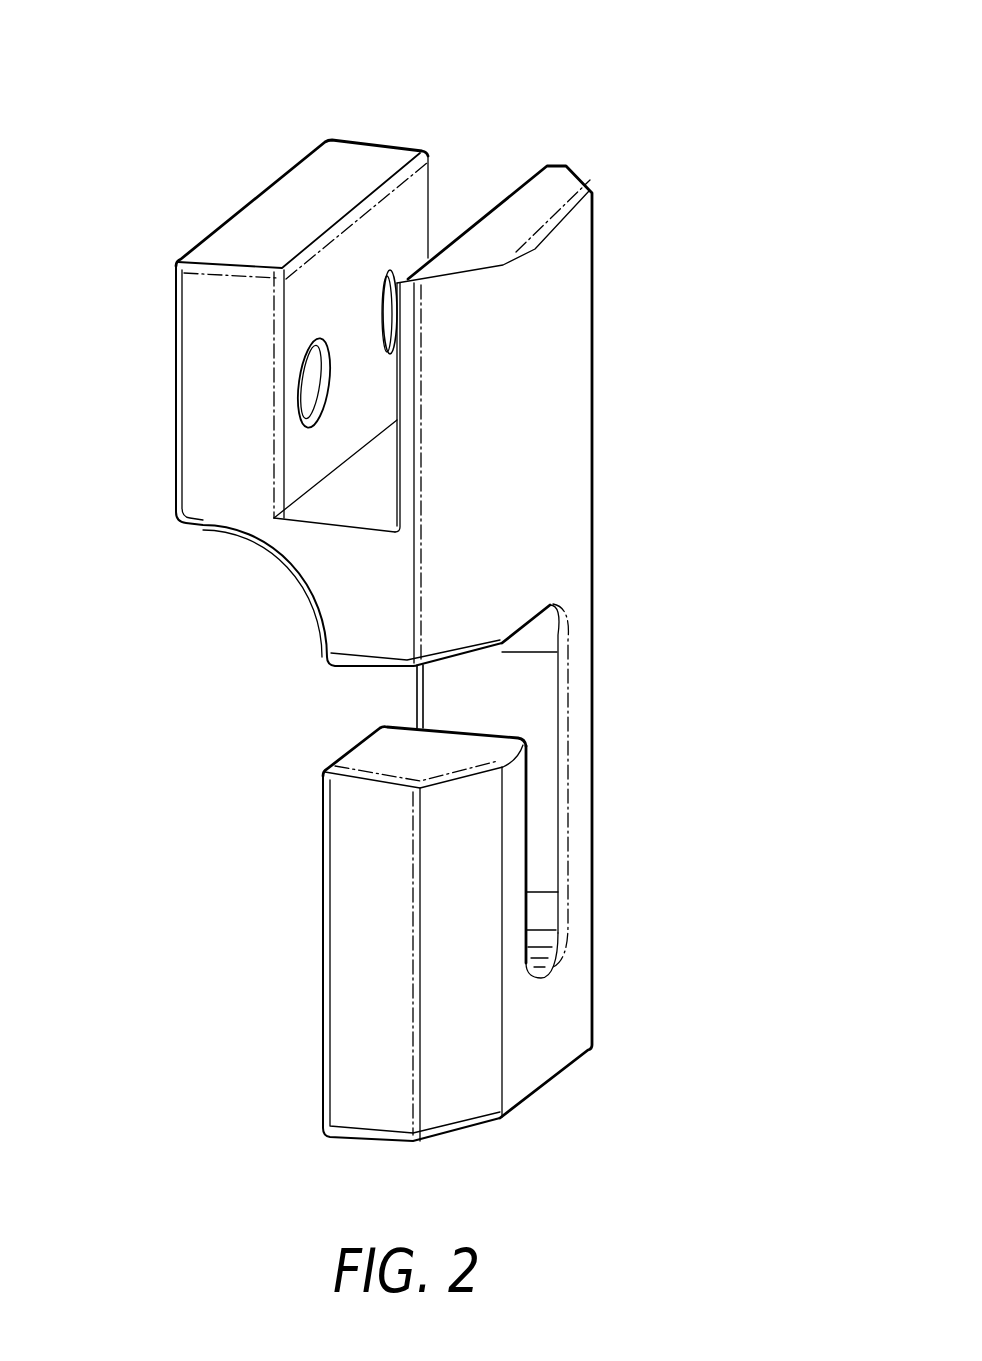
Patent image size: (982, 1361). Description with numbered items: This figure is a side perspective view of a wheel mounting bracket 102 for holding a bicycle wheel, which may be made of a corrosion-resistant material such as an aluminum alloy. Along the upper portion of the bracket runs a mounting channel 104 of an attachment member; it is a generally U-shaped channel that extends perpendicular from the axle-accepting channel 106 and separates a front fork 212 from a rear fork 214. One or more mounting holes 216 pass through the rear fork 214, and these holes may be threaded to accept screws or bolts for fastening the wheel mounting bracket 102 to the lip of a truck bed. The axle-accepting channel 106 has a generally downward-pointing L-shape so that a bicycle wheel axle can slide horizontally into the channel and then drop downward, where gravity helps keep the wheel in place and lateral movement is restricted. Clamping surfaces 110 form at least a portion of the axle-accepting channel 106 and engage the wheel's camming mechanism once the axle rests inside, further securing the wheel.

The wheel mounting bracket 102 is at (708, 183).
The mounting channel 104 is at (347, 303).
The axle-accepting channel 106 is at (417, 702).
The clamping surfaces 110 is at (517, 845).
The front fork 212 is at (497, 212).
The rear fork 214 is at (208, 377).
The mounting holes 216 is at (397, 318).